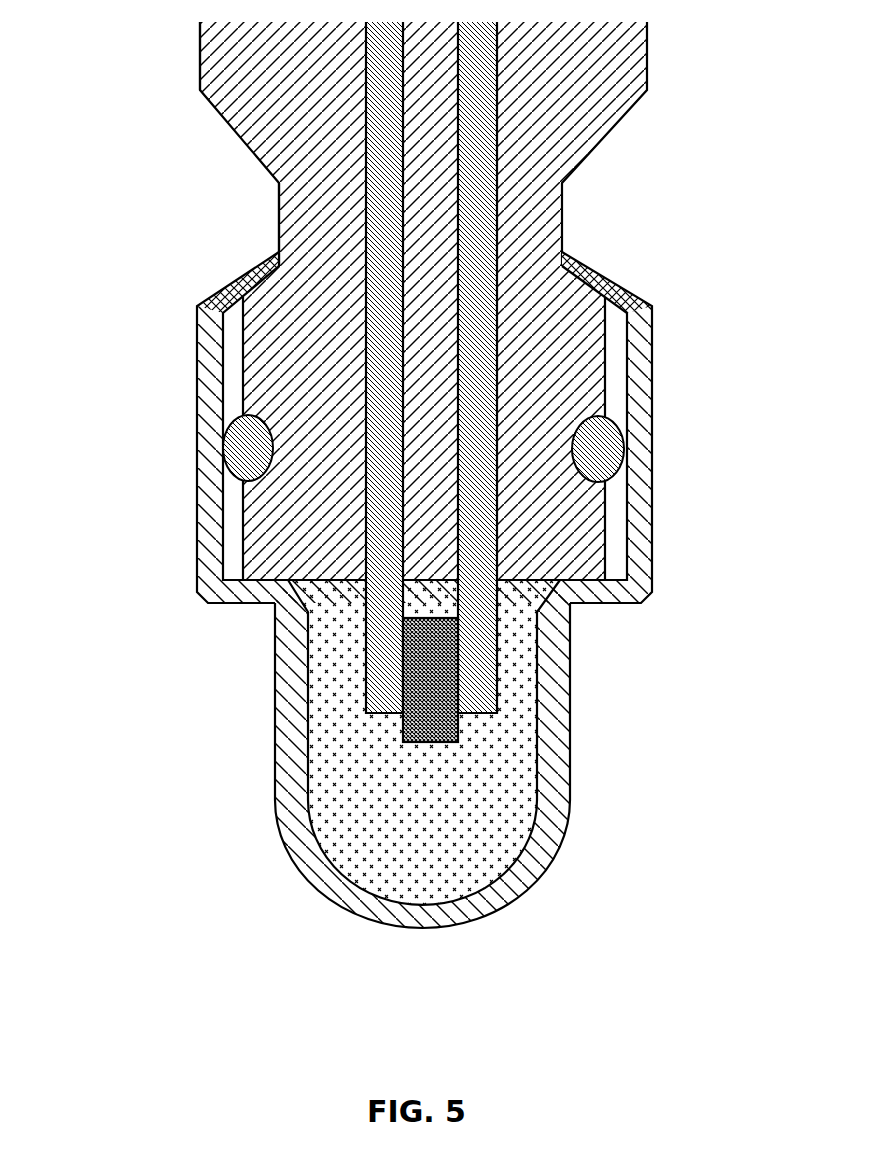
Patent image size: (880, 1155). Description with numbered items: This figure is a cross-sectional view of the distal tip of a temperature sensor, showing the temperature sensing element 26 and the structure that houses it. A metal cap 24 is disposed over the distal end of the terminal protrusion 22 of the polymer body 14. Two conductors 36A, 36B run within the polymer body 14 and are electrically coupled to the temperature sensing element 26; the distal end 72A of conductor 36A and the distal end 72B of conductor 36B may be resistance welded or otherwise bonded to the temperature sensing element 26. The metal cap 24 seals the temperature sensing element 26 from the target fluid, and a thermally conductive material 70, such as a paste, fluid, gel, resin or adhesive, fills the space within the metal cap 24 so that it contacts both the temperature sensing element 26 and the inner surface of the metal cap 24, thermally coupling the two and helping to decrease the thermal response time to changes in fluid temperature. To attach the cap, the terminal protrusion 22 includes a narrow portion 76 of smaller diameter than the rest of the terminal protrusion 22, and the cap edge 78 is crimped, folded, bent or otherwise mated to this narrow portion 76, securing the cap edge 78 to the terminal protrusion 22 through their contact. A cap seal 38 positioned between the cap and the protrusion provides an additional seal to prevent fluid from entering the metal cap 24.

The polymer body 14 is at (648, 64).
The terminal protrusion 22 is at (178, 74).
The metal cap 24 is at (347, 912).
The temperature sensing element 26 is at (400, 726).
The conductor 36A is at (366, 104).
The conductor 36B is at (497, 106).
The cap seal 38 is at (620, 452).
The thermally conductive material 70 is at (465, 802).
The distal end of conductor 72A is at (348, 641).
The distal end of conductor 72B is at (505, 651).
The narrow portion 76 is at (262, 234).
The cap edge 78 is at (203, 284).